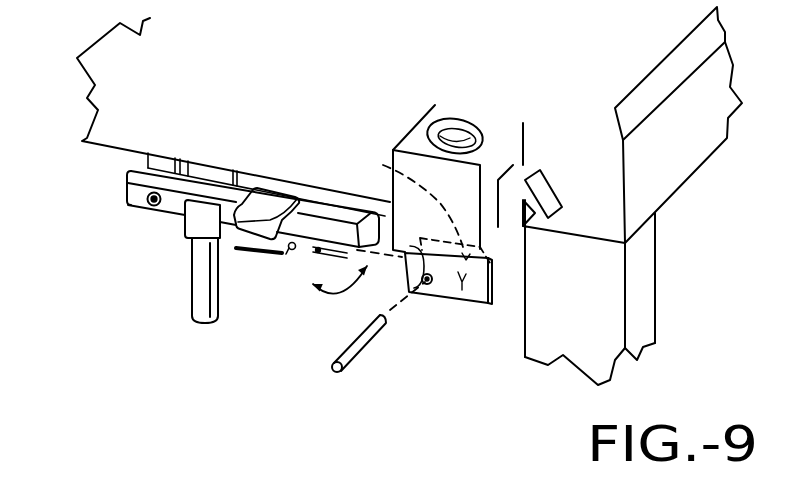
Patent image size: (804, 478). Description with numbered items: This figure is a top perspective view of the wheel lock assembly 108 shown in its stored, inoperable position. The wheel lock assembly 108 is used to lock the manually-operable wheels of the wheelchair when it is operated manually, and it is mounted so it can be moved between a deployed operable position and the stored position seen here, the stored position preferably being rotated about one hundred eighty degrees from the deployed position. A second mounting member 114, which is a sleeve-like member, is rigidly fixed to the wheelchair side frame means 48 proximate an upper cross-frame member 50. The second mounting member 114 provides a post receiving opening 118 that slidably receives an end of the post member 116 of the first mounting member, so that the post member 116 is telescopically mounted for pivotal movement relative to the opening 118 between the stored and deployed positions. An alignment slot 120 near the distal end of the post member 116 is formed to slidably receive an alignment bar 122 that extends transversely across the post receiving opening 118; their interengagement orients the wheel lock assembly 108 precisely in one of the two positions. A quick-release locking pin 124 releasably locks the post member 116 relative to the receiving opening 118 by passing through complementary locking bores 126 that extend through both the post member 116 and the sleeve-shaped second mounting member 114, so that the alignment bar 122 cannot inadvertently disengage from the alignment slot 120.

The wheelchair side frame means 48 is at (168, 108).
The upper cross-frame member 50 is at (672, 152).
The wheel lock assembly 108 is at (122, 251).
The second mounting member 114 is at (488, 315).
The post member 116 is at (287, 257).
The post receiving opening 118 is at (470, 308).
The alignment slot 120 is at (320, 260).
The alignment bar 122 is at (383, 165).
The quick-release locking pin 124 is at (358, 352).
The locking bores 126 is at (293, 252).